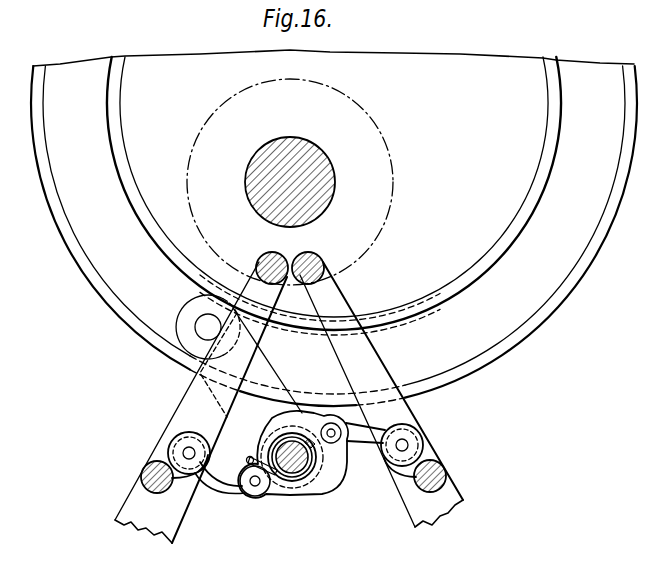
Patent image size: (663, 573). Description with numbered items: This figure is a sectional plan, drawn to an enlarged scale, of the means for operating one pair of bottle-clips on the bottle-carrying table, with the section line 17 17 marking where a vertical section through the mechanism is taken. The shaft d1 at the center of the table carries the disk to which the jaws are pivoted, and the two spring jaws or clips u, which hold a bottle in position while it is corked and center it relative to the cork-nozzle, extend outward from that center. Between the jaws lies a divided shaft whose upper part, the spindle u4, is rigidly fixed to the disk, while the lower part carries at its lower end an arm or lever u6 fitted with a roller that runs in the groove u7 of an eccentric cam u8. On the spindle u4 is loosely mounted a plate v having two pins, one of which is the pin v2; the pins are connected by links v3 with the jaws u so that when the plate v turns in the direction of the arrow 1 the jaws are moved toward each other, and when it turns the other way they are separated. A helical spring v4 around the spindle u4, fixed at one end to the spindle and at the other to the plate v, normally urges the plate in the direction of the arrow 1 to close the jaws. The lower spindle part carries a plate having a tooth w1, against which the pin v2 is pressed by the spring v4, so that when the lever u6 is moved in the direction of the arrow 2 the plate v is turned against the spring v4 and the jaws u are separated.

The shaft d1 is at (335, 189).
The spring jaws or clips u is at (148, 535).
The spindle u4 is at (313, 493).
The arm or lever u6 is at (272, 377).
The groove u7 is at (334, 209).
The eccentric cam u8 is at (515, 348).
The plate v is at (328, 479).
The pin v2 is at (342, 441).
The links v3 is at (384, 414).
The helical spring v4 is at (283, 483).
The tooth w1 is at (312, 412).
The section line 17 17 is at (128, 478).
The arrow 1 is at (312, 510).
The arrow 2 is at (277, 405).